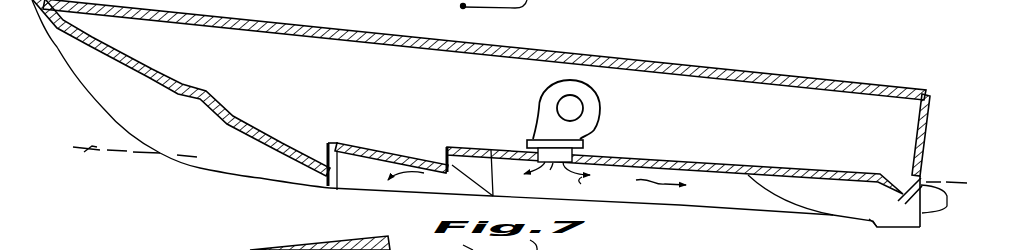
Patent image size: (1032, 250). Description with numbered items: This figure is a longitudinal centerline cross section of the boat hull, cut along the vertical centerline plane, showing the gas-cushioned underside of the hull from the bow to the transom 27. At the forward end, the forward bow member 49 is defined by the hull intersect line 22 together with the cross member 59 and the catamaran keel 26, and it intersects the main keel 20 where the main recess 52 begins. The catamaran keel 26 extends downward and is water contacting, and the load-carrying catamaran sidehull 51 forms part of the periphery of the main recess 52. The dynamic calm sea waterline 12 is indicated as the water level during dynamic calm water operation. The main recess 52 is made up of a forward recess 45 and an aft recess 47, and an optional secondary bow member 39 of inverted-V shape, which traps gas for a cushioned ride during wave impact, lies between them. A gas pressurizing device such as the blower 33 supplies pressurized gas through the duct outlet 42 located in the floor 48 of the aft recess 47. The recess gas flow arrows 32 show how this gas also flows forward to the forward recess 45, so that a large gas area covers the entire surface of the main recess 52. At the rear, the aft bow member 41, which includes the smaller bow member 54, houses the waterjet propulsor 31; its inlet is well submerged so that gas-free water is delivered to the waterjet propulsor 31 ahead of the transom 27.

The dynamic calm sea waterline 12 is at (135, 164).
The main keel 20 is at (238, 131).
The hull intersect line 22 is at (172, 98).
The catamaran keel 26 is at (285, 183).
The transom 27 is at (926, 136).
The waterjet propulsor 31 is at (919, 224).
The recess gas flow arrows 32 is at (645, 181).
The blower 33 is at (599, 121).
The secondary bow member 39 is at (365, 181).
The aft bow member 41 is at (818, 204).
The duct outlet 42 is at (555, 179).
The forward recess 45 is at (410, 186).
The aft recess 47 is at (686, 199).
The aft recess floor 48 is at (725, 173).
The forward bow member 49 is at (270, 154).
The catamaran sidehull 51 is at (253, 182).
The main recess 52 is at (483, 197).
The smaller bow member 54 is at (870, 206).
The cross member 59 is at (140, 78).